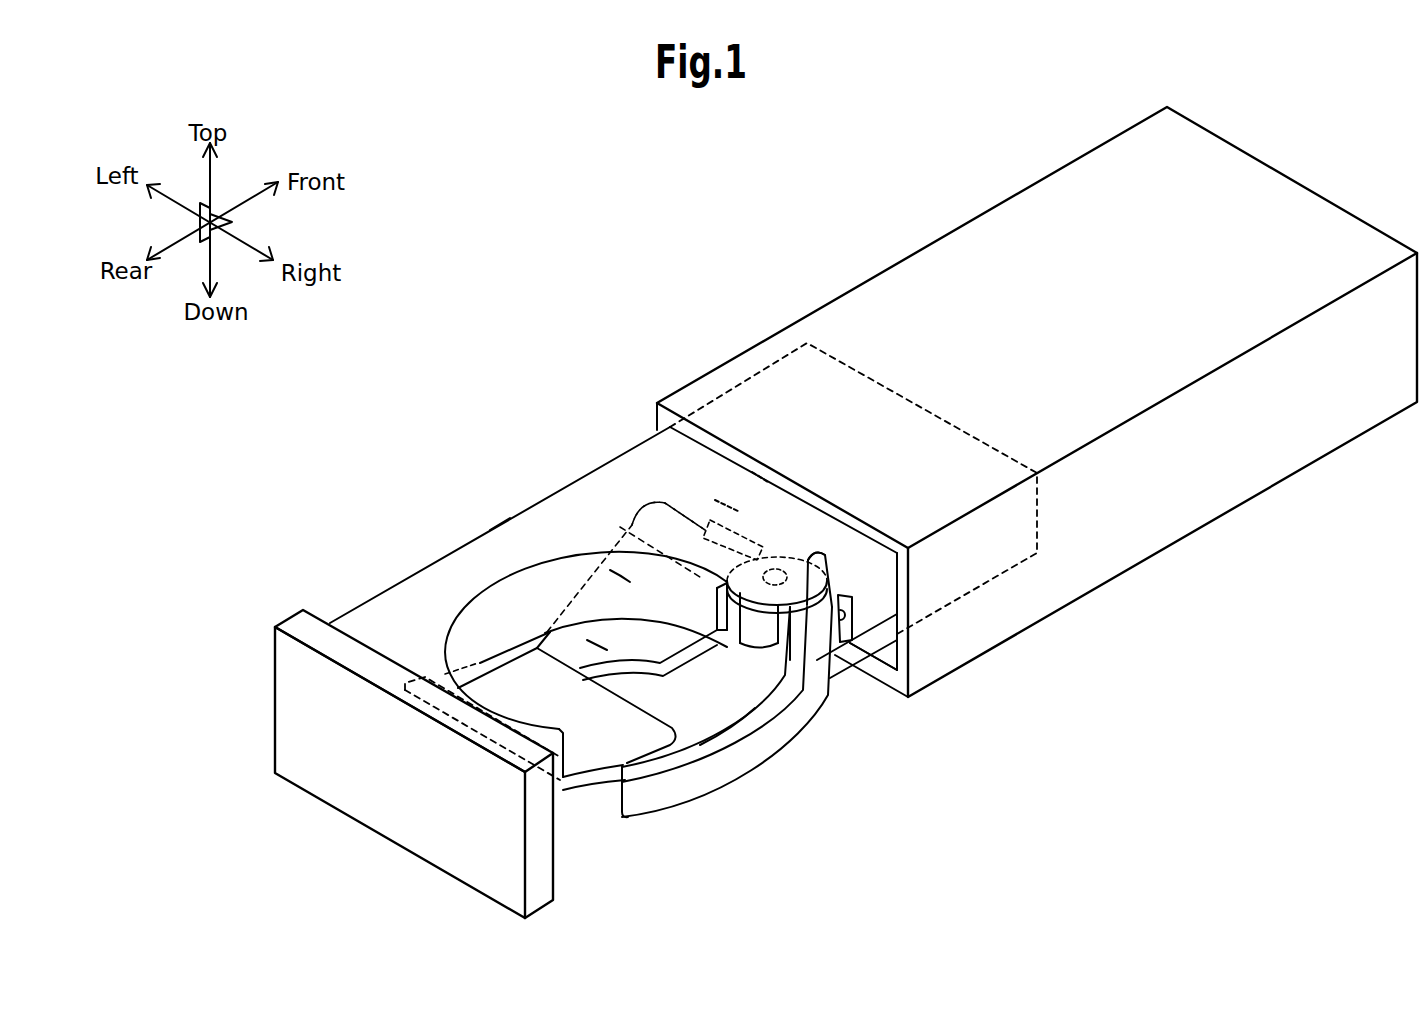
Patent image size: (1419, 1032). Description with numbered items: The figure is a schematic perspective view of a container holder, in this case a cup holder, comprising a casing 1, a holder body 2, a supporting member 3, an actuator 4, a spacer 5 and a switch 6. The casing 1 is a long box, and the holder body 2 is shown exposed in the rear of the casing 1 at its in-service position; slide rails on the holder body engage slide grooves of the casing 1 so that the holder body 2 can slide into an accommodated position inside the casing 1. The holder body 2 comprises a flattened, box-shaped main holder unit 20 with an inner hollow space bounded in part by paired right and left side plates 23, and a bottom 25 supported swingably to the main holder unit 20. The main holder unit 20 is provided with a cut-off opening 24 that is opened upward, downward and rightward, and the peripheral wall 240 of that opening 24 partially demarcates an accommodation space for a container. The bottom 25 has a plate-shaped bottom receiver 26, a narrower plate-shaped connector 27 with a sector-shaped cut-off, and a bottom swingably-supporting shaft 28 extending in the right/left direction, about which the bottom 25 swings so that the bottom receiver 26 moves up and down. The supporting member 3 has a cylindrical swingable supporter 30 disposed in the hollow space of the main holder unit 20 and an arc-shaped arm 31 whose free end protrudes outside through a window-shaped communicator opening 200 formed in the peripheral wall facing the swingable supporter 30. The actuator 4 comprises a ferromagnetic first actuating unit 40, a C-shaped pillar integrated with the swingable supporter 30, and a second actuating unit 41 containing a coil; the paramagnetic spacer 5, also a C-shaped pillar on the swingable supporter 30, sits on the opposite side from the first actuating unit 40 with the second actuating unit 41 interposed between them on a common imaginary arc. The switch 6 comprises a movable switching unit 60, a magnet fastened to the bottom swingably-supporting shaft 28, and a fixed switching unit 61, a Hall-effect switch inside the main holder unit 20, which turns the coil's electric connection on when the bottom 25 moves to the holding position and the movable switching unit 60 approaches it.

The casing 1 is at (1008, 235).
The holder body 2 is at (390, 572).
The supporting member 3 is at (772, 684).
The actuator 4 is at (933, 537).
The spacer 5 is at (813, 550).
The switch 6 is at (725, 490).
The main holder unit 20 is at (500, 542).
The side plate 23 is at (852, 615).
The opening 24 is at (527, 608).
The bottom 25 is at (680, 682).
The bottom receiver 26 is at (607, 753).
The connector 27 is at (598, 648).
The bottom swingably-supporting shaft 28 is at (668, 520).
The swingable supporter 30 is at (828, 650).
The arm 31 is at (760, 740).
The first actuating unit 40 is at (620, 575).
The second actuating unit 41 is at (792, 550).
The movable switching unit 60 is at (705, 535).
The fixed switching unit 61 is at (758, 480).
The communicator opening 200 is at (855, 588).
The peripheral wall 240 is at (490, 618).